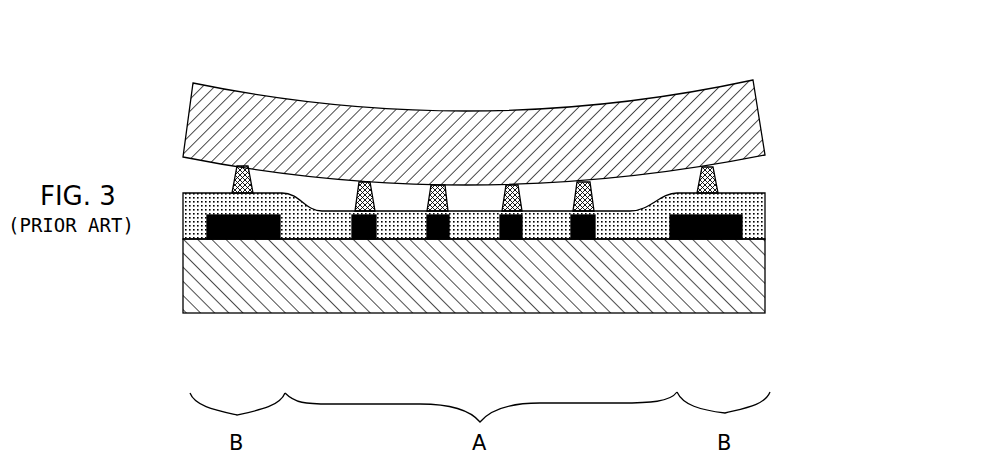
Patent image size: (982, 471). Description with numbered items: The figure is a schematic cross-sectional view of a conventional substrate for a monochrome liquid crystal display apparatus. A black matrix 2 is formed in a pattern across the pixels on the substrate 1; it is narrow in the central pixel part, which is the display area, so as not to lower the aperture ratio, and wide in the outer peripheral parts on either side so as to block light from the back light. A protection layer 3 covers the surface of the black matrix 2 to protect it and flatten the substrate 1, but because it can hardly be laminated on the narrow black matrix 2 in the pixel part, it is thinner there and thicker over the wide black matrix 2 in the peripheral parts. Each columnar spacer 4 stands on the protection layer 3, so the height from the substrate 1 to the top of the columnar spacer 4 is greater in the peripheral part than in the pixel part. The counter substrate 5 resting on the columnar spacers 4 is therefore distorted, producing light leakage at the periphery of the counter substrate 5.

The substrate 1 is at (743, 273).
The black matrix 2 is at (248, 240).
The protection layer 3 is at (742, 203).
The columnar spacer 4 is at (237, 165).
The counter substrate 5 is at (733, 127).